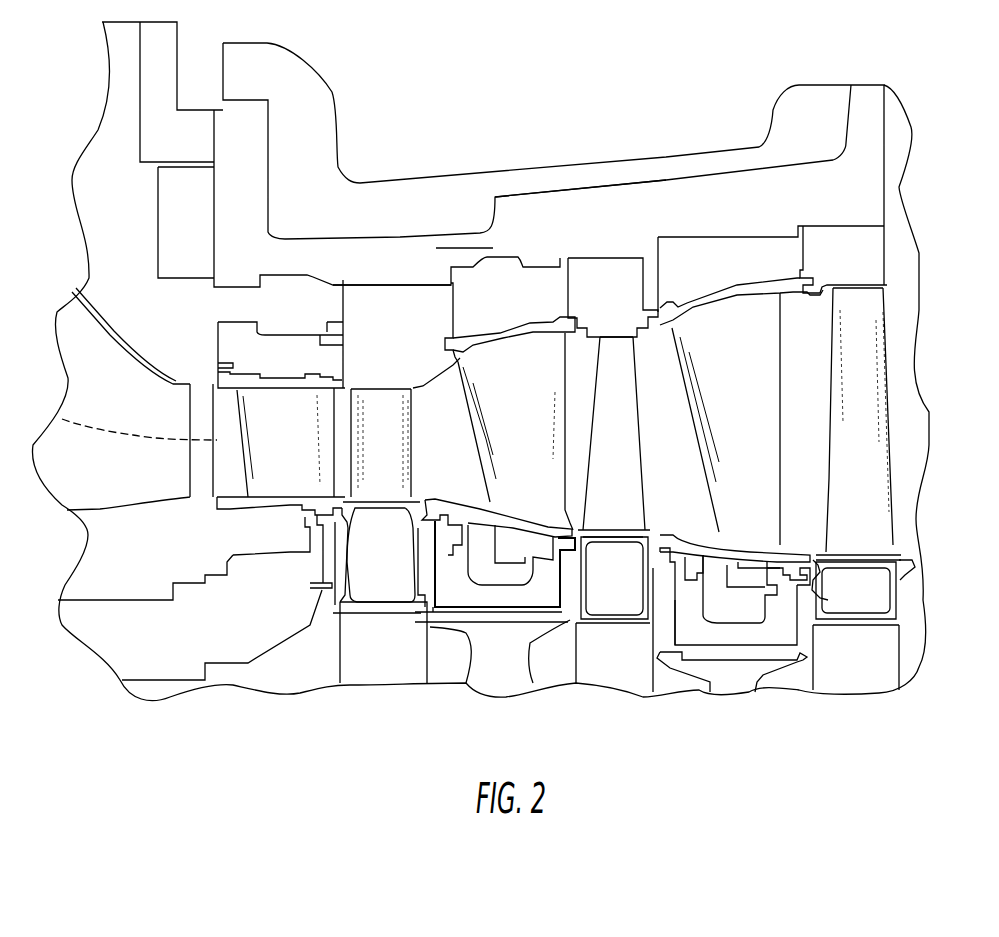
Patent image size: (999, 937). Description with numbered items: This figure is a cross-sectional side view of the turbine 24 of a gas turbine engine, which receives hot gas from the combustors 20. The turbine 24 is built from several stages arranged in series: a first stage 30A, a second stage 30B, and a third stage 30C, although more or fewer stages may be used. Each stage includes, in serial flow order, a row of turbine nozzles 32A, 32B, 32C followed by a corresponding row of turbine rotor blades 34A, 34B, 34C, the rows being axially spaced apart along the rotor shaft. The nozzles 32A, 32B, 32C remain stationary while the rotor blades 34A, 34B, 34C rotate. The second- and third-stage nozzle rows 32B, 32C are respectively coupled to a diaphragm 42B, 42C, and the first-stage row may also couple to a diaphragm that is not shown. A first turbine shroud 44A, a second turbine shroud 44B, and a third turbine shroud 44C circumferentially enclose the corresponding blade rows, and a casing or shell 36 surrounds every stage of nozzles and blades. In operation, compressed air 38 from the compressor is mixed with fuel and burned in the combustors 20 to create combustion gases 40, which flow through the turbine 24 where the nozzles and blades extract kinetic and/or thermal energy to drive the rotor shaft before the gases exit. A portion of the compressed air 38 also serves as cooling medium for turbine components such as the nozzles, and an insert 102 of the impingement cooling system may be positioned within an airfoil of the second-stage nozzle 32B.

The combustor 20 is at (88, 270).
The turbine 24 is at (416, 106).
The casing or shell 36 is at (580, 207).
The compressed air 38 is at (273, 364).
The combustion gases 40 is at (138, 407).
The first turbine shroud 44A is at (407, 337).
The second turbine shroud 44B is at (613, 312).
The third turbine shroud 44C is at (822, 265).
The row of turbine nozzles 32A is at (310, 447).
The row of turbine nozzles 32B is at (538, 436).
The row of turbine nozzles 32C is at (759, 420).
The row of turbine rotor blades 34A is at (403, 495).
The row of turbine rotor blades 34B is at (638, 493).
The row of turbine rotor blades 34C is at (879, 524).
The first stage 30A is at (315, 676).
The second stage 30B is at (558, 676).
The third stage 30C is at (798, 686).
The diaphragm 42B is at (493, 598).
The diaphragm 42C is at (783, 617).
The insert 102 is at (521, 528).